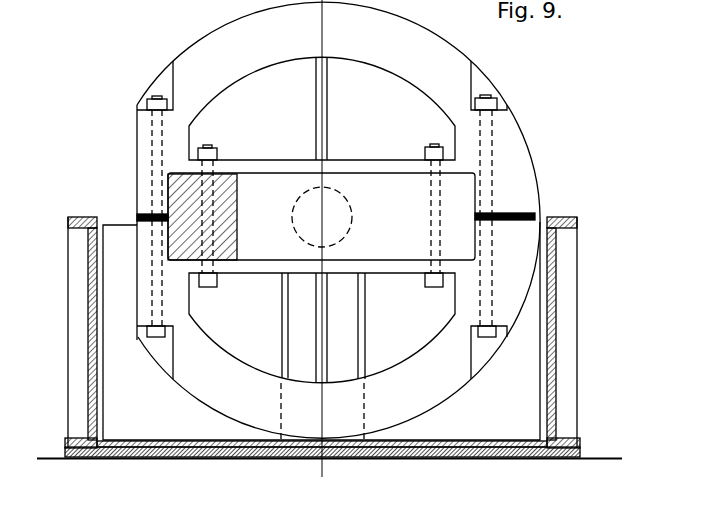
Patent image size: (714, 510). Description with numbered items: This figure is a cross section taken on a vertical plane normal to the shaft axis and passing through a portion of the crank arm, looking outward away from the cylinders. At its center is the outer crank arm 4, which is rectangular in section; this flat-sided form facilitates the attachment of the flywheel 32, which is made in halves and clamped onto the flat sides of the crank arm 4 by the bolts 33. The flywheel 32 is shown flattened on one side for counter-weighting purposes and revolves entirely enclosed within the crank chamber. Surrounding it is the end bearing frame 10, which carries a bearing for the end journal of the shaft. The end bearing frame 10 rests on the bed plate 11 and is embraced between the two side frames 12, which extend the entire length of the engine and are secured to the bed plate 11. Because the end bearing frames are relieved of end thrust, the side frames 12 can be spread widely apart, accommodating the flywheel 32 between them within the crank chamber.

The flywheel 32 is at (187, 62).
The bolts 33 is at (153, 100).
The outer crank arm 4 is at (255, 187).
The end bearing frame 10 is at (113, 222).
The side frames 12 is at (77, 263).
The bed plate 11 is at (498, 455).